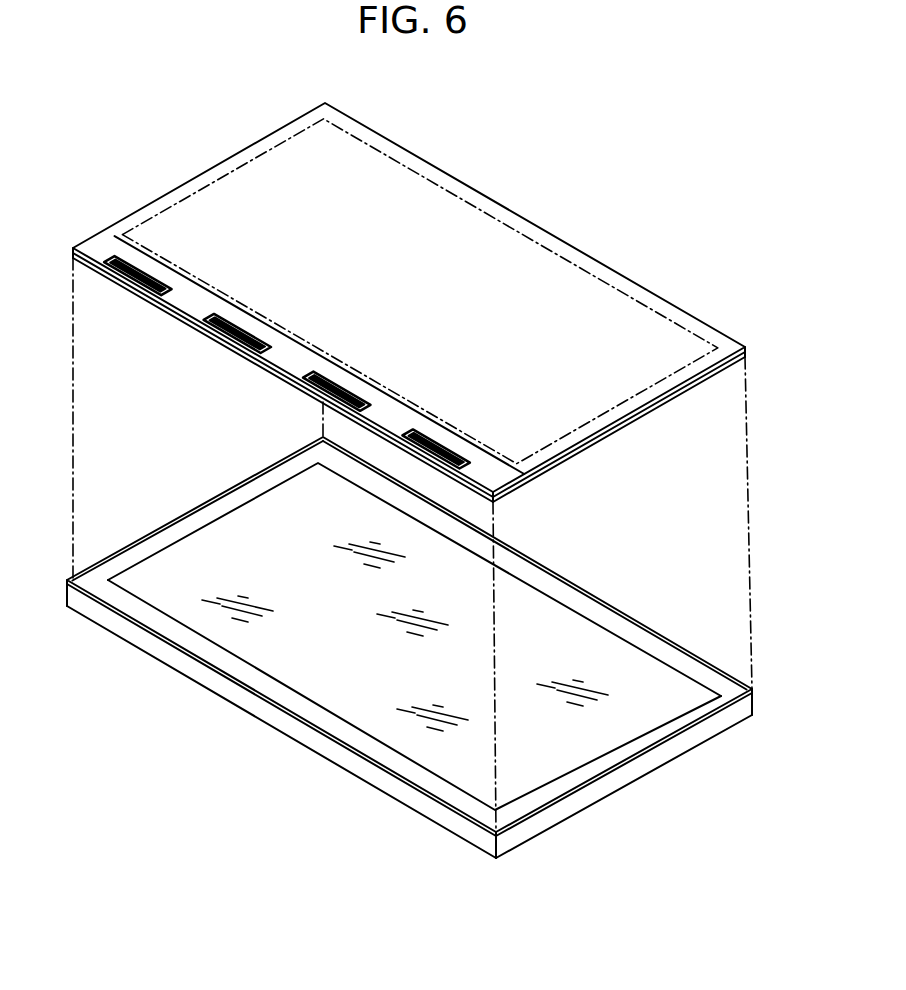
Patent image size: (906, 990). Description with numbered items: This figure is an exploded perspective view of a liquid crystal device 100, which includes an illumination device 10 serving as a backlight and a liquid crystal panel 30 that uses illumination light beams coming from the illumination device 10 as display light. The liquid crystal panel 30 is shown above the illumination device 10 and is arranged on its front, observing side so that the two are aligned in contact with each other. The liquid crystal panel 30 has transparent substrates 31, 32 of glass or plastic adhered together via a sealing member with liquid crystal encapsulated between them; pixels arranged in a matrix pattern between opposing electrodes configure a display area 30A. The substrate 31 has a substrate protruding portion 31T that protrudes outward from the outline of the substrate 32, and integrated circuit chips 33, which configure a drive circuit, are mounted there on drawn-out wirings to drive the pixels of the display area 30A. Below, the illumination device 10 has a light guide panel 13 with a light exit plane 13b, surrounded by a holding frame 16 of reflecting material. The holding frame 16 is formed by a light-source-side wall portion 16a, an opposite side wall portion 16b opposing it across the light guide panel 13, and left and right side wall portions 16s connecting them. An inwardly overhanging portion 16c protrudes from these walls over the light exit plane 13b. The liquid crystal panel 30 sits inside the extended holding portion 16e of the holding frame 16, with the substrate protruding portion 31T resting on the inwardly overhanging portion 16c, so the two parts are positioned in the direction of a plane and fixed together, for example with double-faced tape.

The liquid crystal device 100 is at (534, 116).
The liquid crystal panel 30 is at (203, 153).
The display area 30A is at (485, 207).
The substrate 31 is at (633, 426).
The substrate protruding portion 31T is at (100, 253).
The substrate 32 is at (648, 288).
The integrated circuit chips 33 is at (229, 314).
The illumination device 10 is at (186, 504).
The light guide panel 13 is at (577, 657).
The light exit plane 13b is at (405, 636).
The holding frame 16 is at (602, 792).
The light-source-side wall portion 16a is at (330, 760).
The opposite side wall portion 16b is at (558, 570).
The inwardly overhanging portion 16c is at (318, 722).
The extended holding portion 16e is at (250, 476).
The side wall portions 16s is at (624, 775).